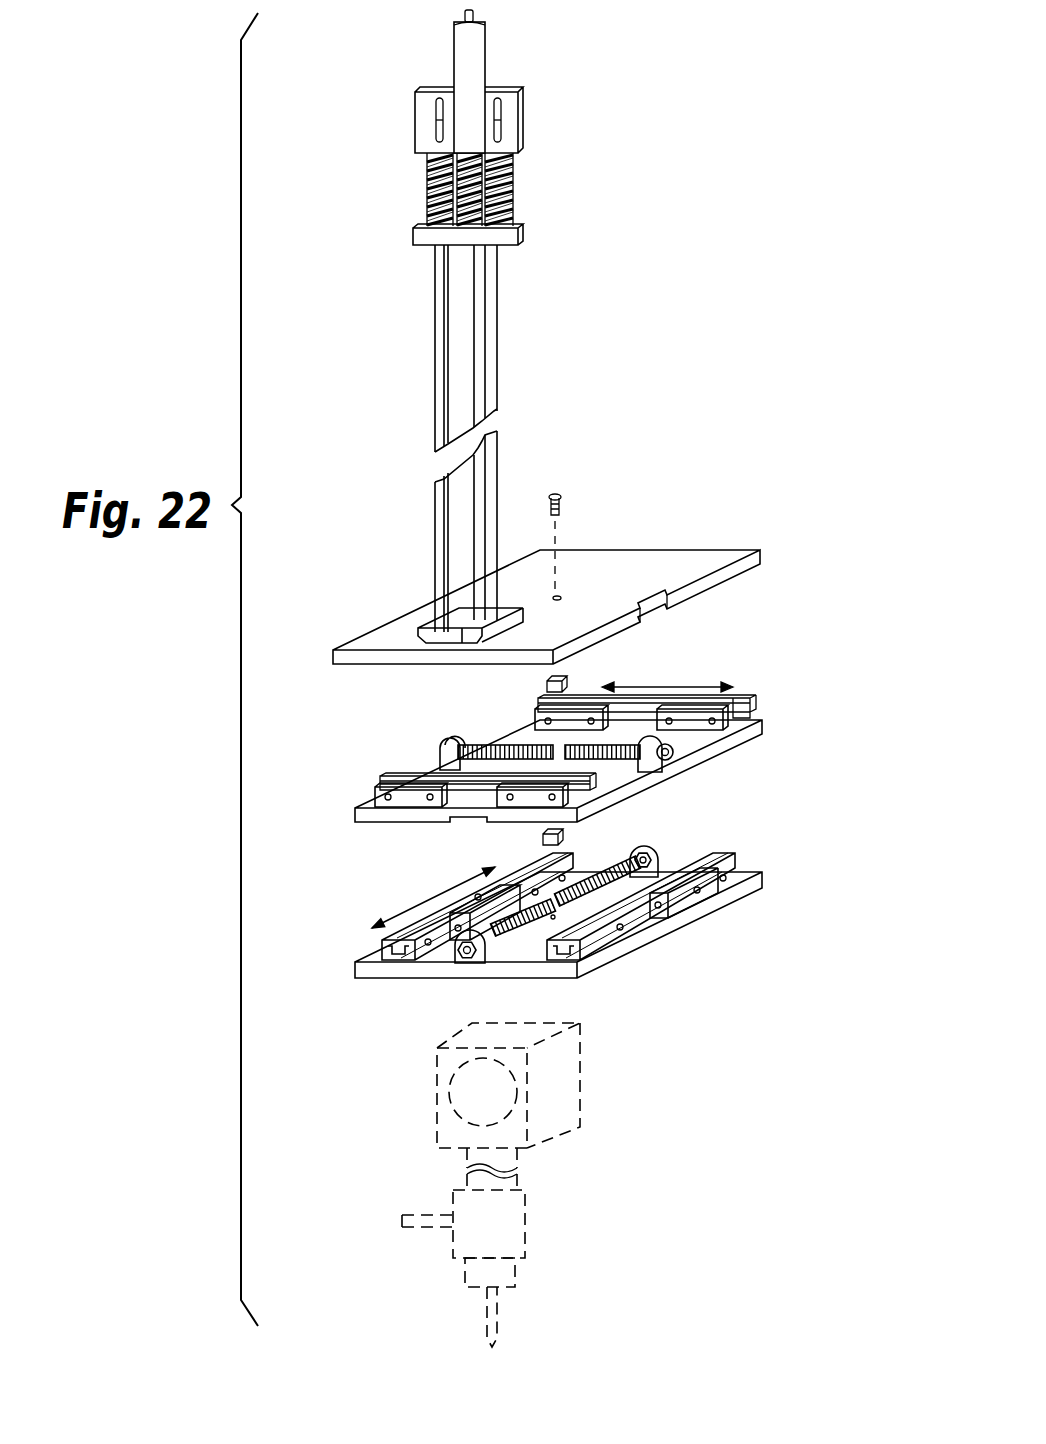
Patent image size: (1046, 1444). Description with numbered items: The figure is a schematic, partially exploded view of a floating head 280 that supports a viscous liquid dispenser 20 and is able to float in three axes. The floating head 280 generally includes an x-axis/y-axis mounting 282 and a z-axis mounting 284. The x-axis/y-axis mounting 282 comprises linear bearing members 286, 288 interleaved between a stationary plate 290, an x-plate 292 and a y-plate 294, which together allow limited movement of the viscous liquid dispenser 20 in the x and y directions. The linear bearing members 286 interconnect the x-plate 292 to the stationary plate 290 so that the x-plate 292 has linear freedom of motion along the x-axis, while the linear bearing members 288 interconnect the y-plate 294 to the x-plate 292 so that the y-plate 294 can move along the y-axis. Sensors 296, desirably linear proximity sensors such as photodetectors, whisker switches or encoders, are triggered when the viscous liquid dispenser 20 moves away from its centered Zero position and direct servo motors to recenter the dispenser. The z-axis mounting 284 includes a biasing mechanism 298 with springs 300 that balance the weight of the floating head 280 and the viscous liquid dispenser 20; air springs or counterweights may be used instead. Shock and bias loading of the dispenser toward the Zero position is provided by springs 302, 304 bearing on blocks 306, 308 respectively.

The viscous liquid dispenser 20 is at (572, 1065).
The floating head 280 is at (708, 485).
The x-axis/y-axis mounting 282 is at (770, 549).
The z-axis mounting 284 is at (532, 237).
The linear bearing members 286 is at (537, 712).
The linear bearing members 288 is at (378, 941).
The stationary plate 290 is at (722, 583).
The x-plate 292 is at (765, 721).
The y-plate 294 is at (765, 877).
The sensors 296 is at (440, 750).
The biasing mechanism 298 is at (524, 183).
The springs 300 is at (425, 183).
The spring 302 is at (633, 719).
The spring 304 is at (505, 942).
The block 306 is at (570, 682).
The block 308 is at (541, 838).